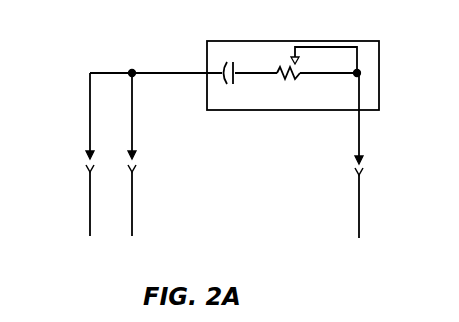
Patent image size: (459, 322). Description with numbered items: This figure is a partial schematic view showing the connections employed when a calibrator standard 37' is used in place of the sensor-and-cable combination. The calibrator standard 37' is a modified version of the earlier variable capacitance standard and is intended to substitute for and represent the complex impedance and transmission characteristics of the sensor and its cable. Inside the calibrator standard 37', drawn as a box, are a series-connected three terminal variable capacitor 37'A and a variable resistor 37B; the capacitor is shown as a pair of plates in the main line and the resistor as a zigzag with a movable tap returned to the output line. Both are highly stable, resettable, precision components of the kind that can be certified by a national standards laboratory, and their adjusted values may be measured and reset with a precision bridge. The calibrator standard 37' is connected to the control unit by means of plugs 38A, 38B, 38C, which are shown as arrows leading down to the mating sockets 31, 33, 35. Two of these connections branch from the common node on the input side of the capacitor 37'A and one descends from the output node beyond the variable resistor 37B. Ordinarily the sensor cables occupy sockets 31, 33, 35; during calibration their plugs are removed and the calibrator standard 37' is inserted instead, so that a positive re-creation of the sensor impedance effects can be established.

The calibrator standard 37' is at (265, 64).
The three terminal variable capacitor 37'A is at (244, 102).
The variable resistor 37B is at (300, 60).
The plug 38A is at (87, 158).
The plug 38B is at (136, 158).
The plug 38C is at (363, 159).
The socket 31 is at (88, 170).
The socket 33 is at (134, 170).
The socket 35 is at (362, 172).